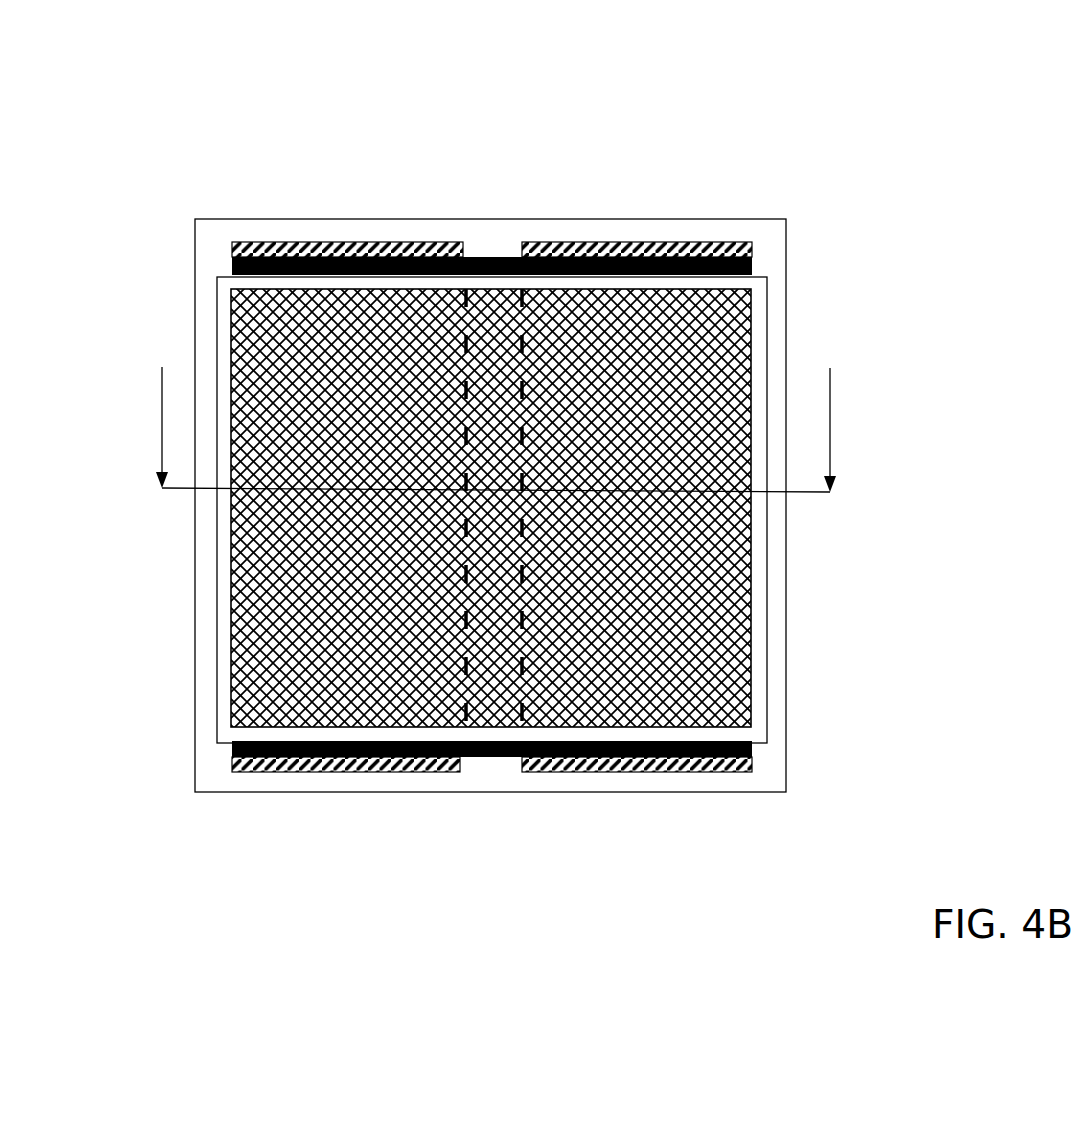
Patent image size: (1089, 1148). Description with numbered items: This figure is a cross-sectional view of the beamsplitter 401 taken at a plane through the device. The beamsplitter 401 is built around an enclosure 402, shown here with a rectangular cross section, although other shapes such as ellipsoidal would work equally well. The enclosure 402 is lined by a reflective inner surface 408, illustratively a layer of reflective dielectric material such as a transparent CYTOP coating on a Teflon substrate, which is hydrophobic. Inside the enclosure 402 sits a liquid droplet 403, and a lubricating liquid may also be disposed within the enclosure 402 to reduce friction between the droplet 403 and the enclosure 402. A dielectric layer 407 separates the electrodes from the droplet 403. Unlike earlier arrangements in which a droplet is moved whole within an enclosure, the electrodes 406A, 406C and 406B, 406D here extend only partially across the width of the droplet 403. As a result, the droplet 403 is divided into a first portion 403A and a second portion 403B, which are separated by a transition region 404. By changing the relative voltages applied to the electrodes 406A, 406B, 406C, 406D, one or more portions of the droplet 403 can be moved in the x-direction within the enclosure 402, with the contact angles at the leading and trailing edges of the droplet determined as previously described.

The beamsplitter 401 is at (218, 118).
The enclosure 402 is at (773, 680).
The droplet 403 is at (480, 508).
The droplet portion 403A is at (653, 585).
The droplet portion 403B is at (313, 620).
The transition region 404 is at (483, 330).
The electrode 406A is at (360, 248).
The electrode 406B is at (675, 245).
The electrode 406C is at (327, 765).
The electrode 406D is at (695, 773).
The dielectric layer 407 is at (233, 256).
The reflective inner surface 408 is at (760, 330).